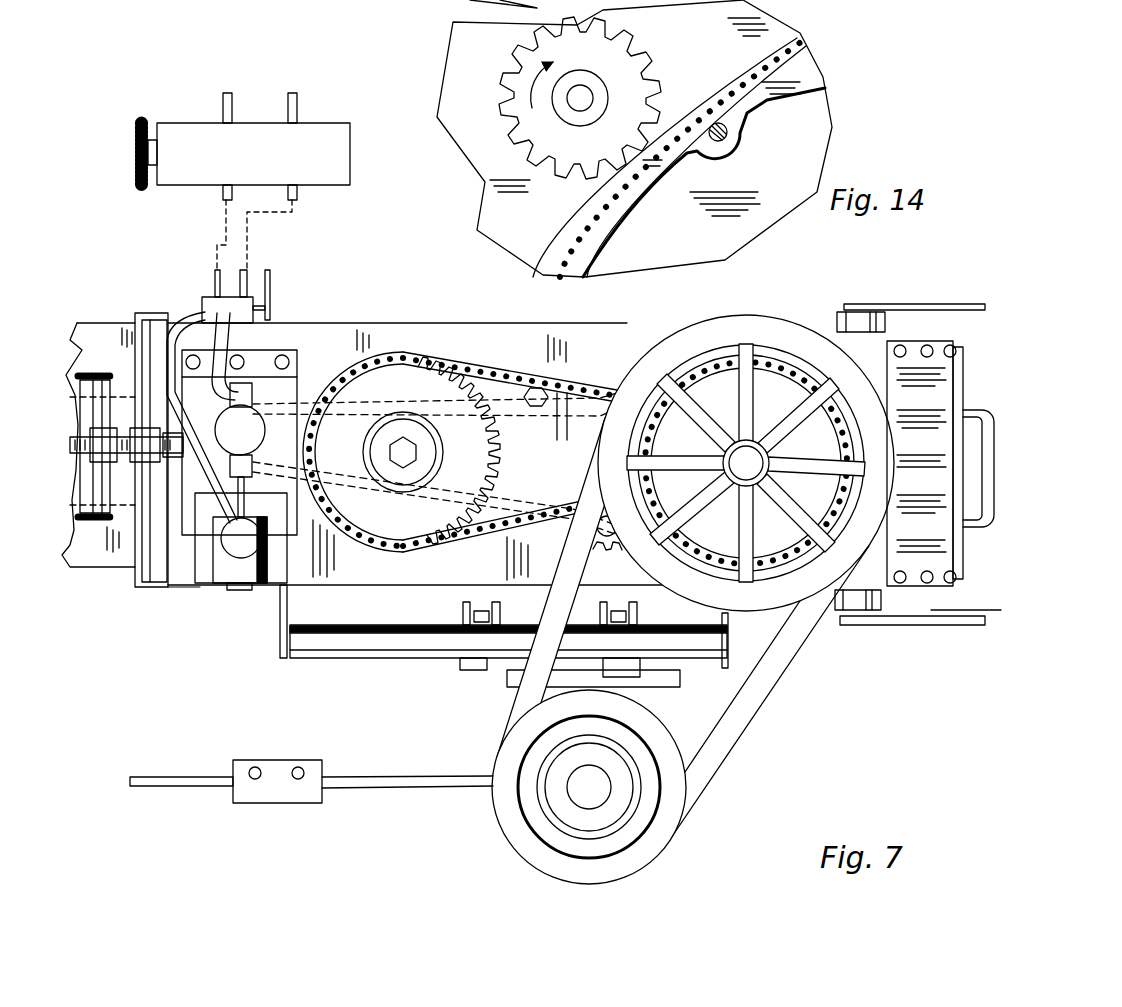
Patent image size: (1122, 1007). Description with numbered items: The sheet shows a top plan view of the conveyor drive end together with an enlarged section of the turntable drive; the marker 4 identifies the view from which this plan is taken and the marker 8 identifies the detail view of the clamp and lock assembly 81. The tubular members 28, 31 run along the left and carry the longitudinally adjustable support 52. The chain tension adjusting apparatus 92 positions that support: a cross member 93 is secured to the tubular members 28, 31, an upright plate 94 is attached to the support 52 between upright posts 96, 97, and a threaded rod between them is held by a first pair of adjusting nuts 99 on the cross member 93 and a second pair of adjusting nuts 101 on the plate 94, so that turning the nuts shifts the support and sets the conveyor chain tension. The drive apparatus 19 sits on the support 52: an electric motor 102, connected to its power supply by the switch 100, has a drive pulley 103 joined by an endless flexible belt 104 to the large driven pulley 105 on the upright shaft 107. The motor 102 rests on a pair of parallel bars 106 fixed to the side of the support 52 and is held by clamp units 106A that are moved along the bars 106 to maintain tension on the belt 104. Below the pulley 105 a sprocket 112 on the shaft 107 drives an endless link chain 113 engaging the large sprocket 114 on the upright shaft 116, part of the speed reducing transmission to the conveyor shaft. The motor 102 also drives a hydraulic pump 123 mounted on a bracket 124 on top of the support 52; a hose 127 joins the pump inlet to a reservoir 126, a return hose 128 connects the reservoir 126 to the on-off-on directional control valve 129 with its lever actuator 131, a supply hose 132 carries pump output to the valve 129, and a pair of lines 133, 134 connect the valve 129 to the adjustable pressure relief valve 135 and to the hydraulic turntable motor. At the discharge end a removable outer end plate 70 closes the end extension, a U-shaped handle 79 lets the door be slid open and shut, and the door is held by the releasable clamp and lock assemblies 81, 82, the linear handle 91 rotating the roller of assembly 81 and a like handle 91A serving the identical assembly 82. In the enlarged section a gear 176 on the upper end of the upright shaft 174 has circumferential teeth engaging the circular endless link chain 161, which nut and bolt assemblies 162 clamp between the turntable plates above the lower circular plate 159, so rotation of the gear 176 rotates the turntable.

In FIG. 7, the drive apparatus 19 is at (607, 350).
In FIG. 7, the tubular member 28 is at (90, 337).
In FIG. 7, the tubular member 31 is at (85, 562).
In FIG. 7, the support 52 is at (337, 338).
In FIG. 7, the removable outer end plate 70 is at (929, 534).
In FIG. 7, the U-shaped handle 79 is at (990, 390).
In FIG. 7, the releasable clamp and lock assembly 81 is at (905, 632).
In FIG. 7, the releasable clamp and lock assembly 82 is at (856, 296).
In FIG. 7, the linear handle 91 is at (924, 625).
In FIG. 7, the upper plate 91A is at (972, 275).
In FIG. 7, the chain tension adjusting apparatus 92 is at (107, 335).
In FIG. 7, the cross member 93 is at (83, 400).
In FIG. 7, the upright plate 94 is at (147, 556).
In FIG. 7, the upright post 96 is at (163, 335).
In FIG. 7, the upright post 97 is at (157, 590).
In FIG. 7, the first pair of adjusting nuts 99 is at (108, 450).
In FIG. 7, the switch 100 is at (270, 790).
In FIG. 7, the second pair of adjusting nuts 101 is at (120, 458).
In FIG. 7, the electric motor 102 is at (613, 882).
In FIG. 7, the drive pulley 103 is at (623, 837).
In FIG. 7, the endless flexible belt 104 is at (695, 780).
In FIG. 7, the large driven pulley 105 is at (740, 330).
In FIG. 7, the parallel bars 106 is at (313, 643).
In FIG. 7, the clamp units 106A is at (463, 617).
In FIG. 7, the upright shaft 107 is at (743, 453).
In FIG. 7, the sprocket 112 is at (700, 477).
In FIG. 7, the endless link chain 113 is at (445, 360).
In FIG. 7, the large sprocket 114 is at (383, 378).
In FIG. 7, the upright shaft 116 is at (407, 448).
In FIG. 7, the hydraulic pump 123 is at (240, 450).
In FIG. 7, the bracket 124 is at (317, 344).
In FIG. 7, the reservoir 126 is at (238, 548).
In FIG. 7, the hose 127 is at (242, 515).
In FIG. 7, the return hose 128 is at (202, 305).
In FIG. 7, the on-off-on directional control valve 129 is at (250, 297).
In FIG. 7, the lever actuator 131 is at (270, 278).
In FIG. 7, the supply hose 132 is at (223, 332).
In FIG. 7, the line 133 is at (217, 262).
In FIG. 7, the line 134 is at (247, 233).
In FIG. 7, the adjustable pressure relief valve 135 is at (352, 150).
In FIG. 14, the lower circular plate 159 is at (600, 223).
In FIG. 14, the circular endless link chain 161 is at (825, 73).
In FIG. 14, the nut and bolt assemblies 162 is at (722, 140).
In FIG. 14, the upright shaft 174 is at (578, 102).
In FIG. 14, the gear 176 is at (603, 57).
In FIG. 7, the section line 4 is at (77, 598).
In FIG. 7, the section line 8 is at (863, 540).